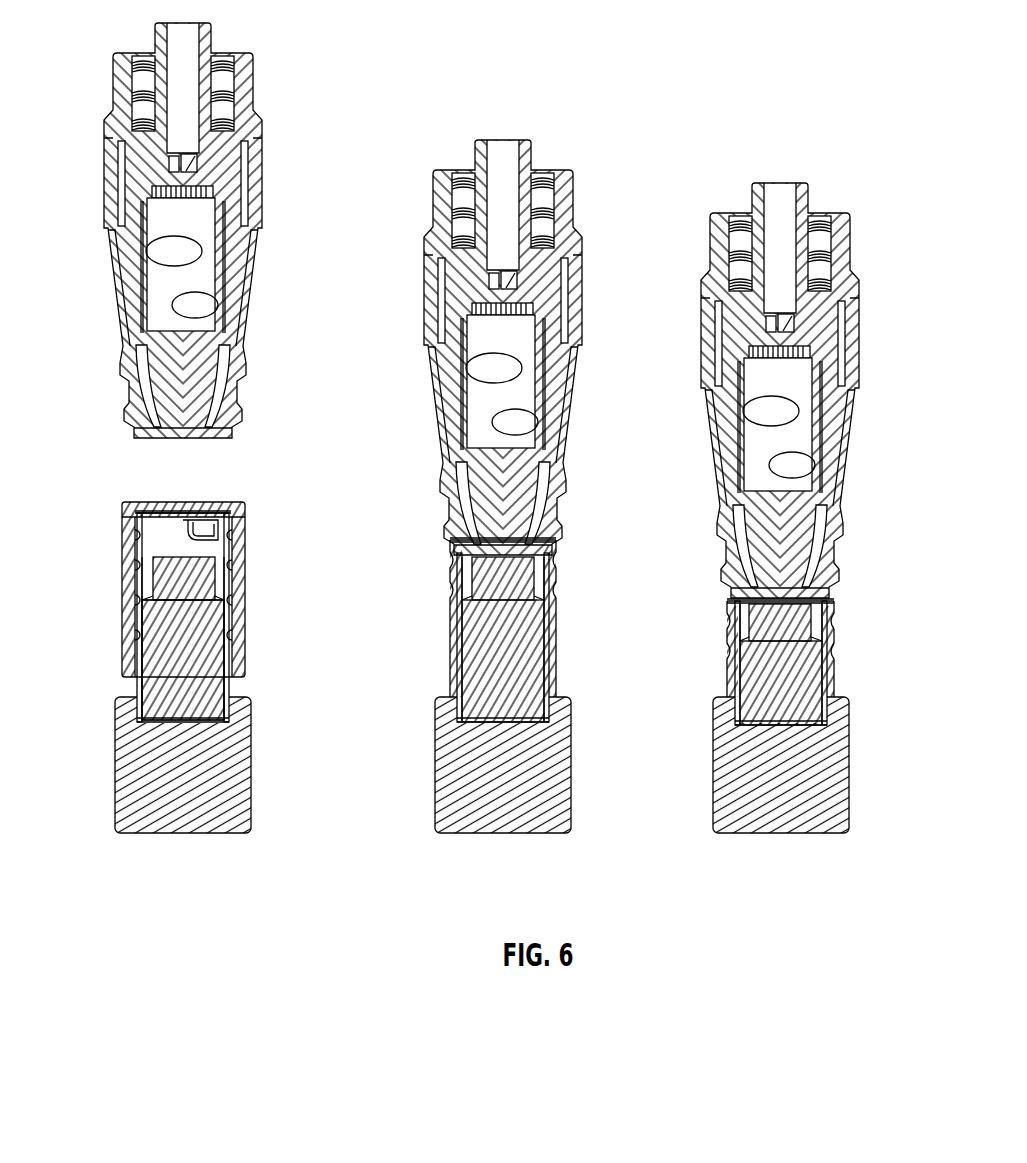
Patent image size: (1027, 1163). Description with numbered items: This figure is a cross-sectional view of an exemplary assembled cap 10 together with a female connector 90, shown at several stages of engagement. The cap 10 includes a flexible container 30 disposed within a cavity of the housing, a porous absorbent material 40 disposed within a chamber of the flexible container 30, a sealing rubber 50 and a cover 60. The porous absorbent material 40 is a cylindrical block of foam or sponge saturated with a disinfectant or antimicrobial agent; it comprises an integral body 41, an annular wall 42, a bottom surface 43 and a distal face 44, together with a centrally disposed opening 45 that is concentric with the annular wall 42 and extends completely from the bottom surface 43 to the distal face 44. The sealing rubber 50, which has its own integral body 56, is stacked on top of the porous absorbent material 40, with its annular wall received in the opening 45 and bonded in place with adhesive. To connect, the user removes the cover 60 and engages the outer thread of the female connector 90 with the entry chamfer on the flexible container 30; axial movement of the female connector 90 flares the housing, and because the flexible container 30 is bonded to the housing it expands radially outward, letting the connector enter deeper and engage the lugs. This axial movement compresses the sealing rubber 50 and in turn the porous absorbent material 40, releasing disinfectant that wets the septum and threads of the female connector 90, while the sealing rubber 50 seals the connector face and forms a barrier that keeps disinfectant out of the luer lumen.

The cap 10 is at (242, 823).
The flexible container 30 is at (223, 663).
The porous absorbent material 40 is at (217, 615).
The integral body 41 is at (213, 697).
The annular wall 42 is at (224, 672).
The bottom surface 43 is at (182, 712).
The distal face 44 is at (148, 562).
The centrally disposed opening 45 is at (160, 600).
The sealing rubber 50 is at (208, 580).
The integral body 56 is at (160, 588).
The cover 60 is at (242, 533).
The female connector 90 is at (243, 267).